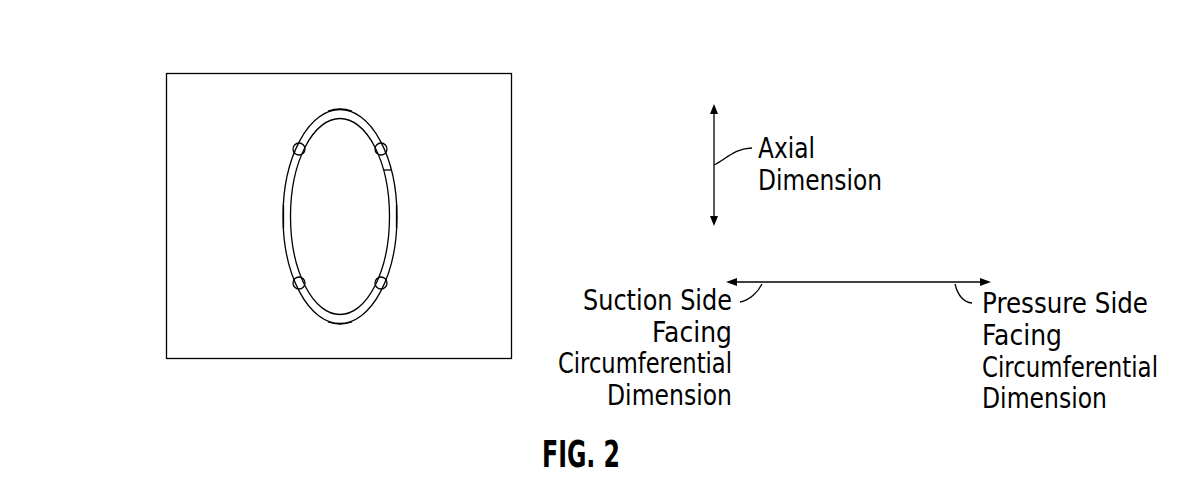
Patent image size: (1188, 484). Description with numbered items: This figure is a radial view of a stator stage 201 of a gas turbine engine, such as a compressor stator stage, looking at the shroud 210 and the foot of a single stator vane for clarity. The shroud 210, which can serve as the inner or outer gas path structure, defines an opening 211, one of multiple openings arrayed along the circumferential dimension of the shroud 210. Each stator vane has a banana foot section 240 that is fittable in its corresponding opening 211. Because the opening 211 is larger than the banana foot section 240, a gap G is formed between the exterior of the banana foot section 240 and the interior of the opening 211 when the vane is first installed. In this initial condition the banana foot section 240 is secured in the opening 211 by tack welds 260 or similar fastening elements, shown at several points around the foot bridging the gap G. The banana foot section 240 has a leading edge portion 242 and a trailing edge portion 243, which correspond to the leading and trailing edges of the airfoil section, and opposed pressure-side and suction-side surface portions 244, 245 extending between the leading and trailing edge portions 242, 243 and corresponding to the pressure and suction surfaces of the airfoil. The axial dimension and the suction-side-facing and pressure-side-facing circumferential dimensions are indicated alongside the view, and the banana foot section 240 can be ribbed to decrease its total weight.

The stator stage 201 is at (190, 90).
The shroud 210 is at (166, 208).
The banana foot section 240 is at (366, 121).
The trailing edge portion 243 is at (339, 109).
The leading edge portion 242 is at (330, 323).
The pressure-side surface portion 244 is at (388, 200).
The suction-side surface portion 245 is at (287, 217).
The opening 211 is at (396, 213).
The tack weld 260 is at (294, 145).
The gap G is at (394, 166).